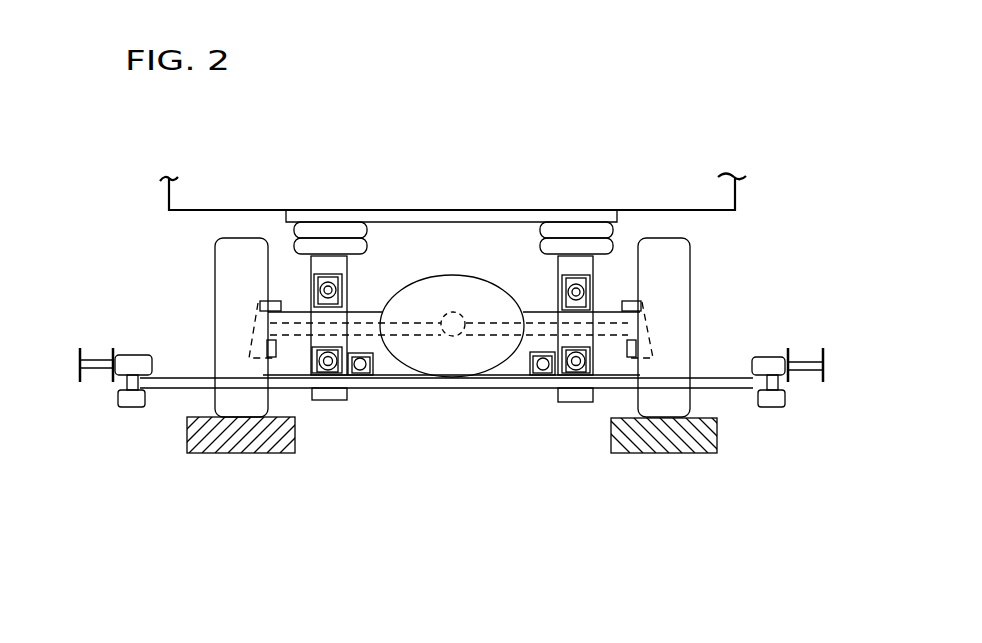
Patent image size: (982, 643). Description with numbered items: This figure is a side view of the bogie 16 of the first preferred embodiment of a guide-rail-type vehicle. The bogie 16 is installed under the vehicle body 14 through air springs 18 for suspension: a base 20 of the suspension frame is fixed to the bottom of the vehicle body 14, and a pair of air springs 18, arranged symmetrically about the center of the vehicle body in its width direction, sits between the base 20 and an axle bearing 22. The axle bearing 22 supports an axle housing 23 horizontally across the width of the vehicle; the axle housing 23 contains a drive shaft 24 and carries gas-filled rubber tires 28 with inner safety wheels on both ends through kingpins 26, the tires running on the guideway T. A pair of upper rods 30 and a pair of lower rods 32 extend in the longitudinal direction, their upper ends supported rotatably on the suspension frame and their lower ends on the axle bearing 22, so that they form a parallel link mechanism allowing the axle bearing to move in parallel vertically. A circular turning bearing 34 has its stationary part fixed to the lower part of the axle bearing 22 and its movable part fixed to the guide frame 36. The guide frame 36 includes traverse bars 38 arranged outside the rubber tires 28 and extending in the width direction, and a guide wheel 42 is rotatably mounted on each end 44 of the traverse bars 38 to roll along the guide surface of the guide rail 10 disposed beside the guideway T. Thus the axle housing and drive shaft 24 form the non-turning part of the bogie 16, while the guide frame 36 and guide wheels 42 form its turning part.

The guide rail 10 is at (80, 360).
The vehicle body 14 is at (735, 196).
The bogie 16 is at (708, 298).
The air spring 18 is at (367, 228).
The base 20 is at (620, 213).
The axle bearing 22 is at (347, 273).
The axle housing 23 is at (443, 276).
The drive shaft 24 is at (455, 337).
The kingpin 26 is at (273, 300).
The rubber tire 28 is at (213, 288).
The upper rod 30 is at (322, 288).
The lower rod 32 is at (313, 362).
The circular turning bearing 34 is at (368, 375).
The guide frame 36 is at (442, 396).
The traverse bar 38 is at (722, 387).
The guide wheel 42 is at (125, 366).
The end of traverse bar 44 is at (160, 377).
The guideway T is at (192, 416).